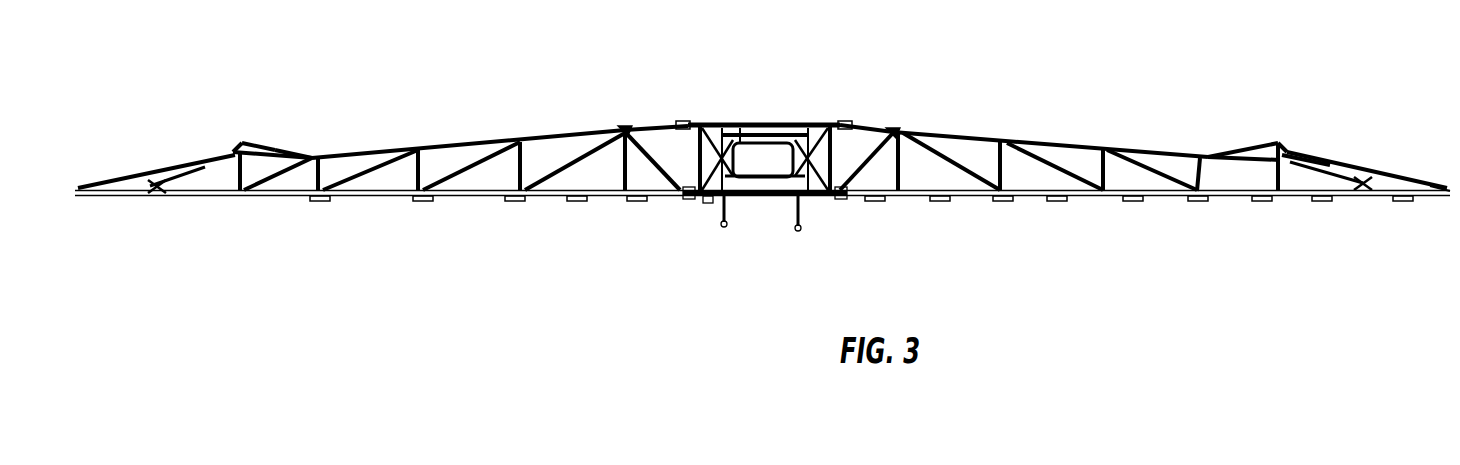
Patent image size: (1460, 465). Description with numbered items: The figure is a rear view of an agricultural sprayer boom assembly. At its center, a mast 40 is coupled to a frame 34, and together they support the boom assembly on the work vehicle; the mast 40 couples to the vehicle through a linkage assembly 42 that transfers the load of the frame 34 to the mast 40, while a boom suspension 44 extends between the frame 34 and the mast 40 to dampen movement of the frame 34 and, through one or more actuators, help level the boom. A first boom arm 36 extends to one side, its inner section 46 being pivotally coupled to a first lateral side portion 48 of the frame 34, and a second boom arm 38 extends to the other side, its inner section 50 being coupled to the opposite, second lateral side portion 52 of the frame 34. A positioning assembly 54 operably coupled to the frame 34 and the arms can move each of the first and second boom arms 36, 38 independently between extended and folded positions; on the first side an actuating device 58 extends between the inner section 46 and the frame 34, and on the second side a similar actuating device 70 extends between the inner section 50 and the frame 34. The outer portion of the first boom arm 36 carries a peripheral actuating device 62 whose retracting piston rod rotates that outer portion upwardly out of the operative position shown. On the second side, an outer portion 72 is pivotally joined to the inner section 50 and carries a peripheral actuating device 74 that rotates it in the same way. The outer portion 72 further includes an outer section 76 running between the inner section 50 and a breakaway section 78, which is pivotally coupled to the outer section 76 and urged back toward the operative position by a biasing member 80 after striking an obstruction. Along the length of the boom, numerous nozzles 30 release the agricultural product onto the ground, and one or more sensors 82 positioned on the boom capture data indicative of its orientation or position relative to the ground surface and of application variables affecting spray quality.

The nozzles 30 is at (833, 255).
The frame 34 is at (765, 126).
The first boom arm 36 is at (496, 121).
The second boom arm 38 is at (1024, 116).
The mast 40 is at (692, 99).
The linkage assembly 42 is at (730, 245).
The boom suspension 44 is at (740, 97).
The inner section 46 is at (762, 233).
The first lateral side portion 48 is at (660, 88).
The inner section 50 is at (1044, 241).
The second lateral side portion 52 is at (838, 85).
The positioning assembly 54 is at (741, 97).
The actuating device 58 is at (682, 222).
The peripheral actuating device 62 is at (272, 130).
The actuating device 70 is at (838, 224).
The outer portion 72 is at (1362, 280).
The peripheral actuating device 74 is at (1246, 124).
The outer section 76 is at (1297, 136).
The breakaway section 78 is at (1433, 152).
The biasing member 80 is at (1323, 128).
The sensors 82 is at (762, 221).